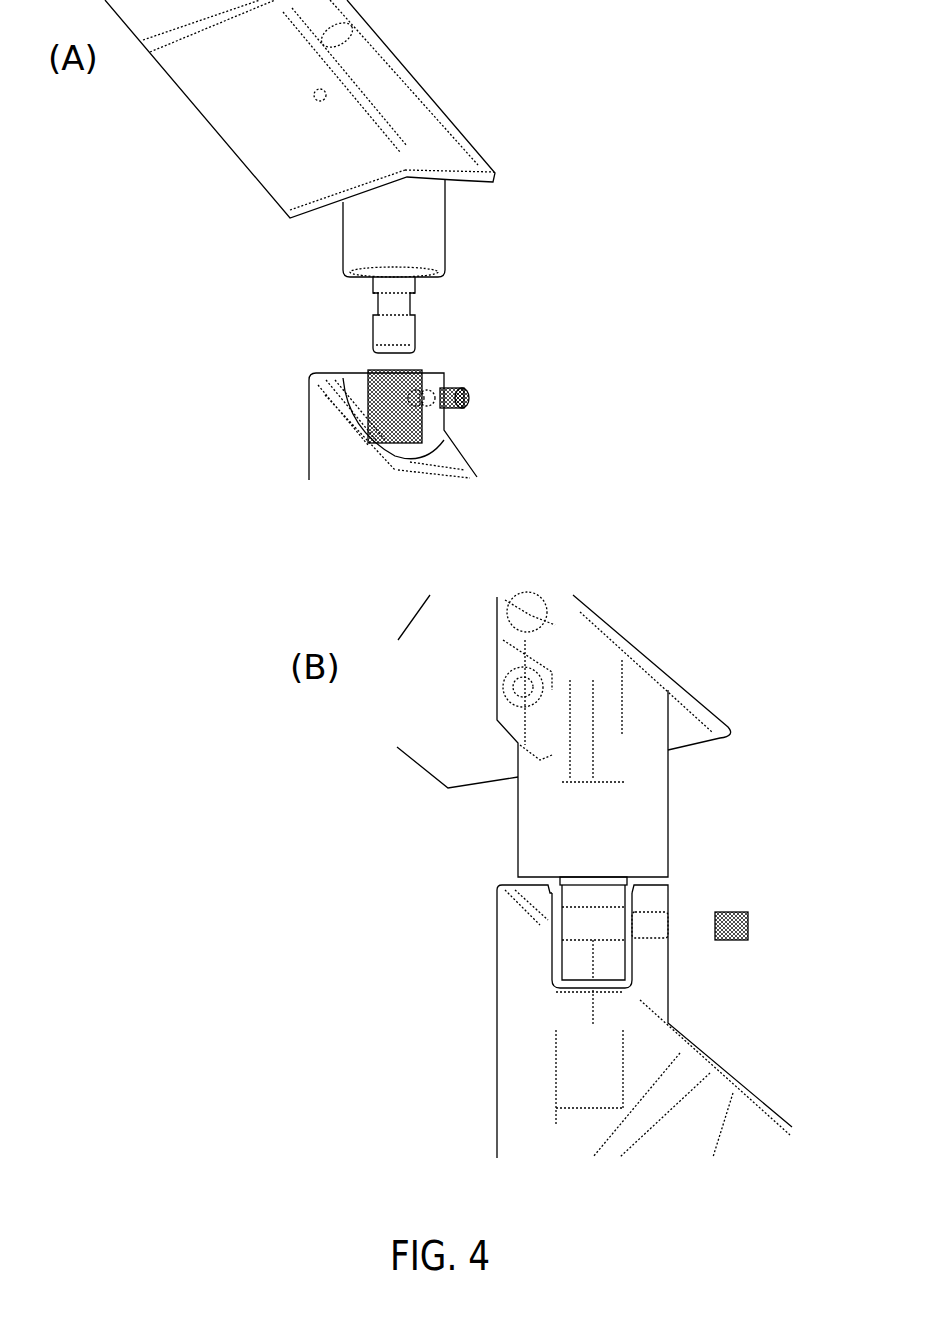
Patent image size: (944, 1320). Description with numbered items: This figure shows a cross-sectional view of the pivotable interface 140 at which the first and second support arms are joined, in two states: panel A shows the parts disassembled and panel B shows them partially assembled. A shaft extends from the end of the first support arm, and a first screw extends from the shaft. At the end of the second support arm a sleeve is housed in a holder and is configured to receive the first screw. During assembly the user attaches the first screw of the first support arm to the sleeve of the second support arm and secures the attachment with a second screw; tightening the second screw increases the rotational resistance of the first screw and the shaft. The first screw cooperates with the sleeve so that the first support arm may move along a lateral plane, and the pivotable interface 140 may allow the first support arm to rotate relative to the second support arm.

The pivotable interface 140 is at (735, 100).